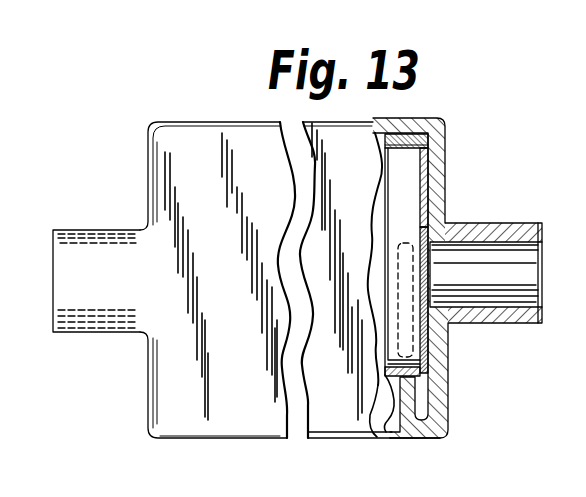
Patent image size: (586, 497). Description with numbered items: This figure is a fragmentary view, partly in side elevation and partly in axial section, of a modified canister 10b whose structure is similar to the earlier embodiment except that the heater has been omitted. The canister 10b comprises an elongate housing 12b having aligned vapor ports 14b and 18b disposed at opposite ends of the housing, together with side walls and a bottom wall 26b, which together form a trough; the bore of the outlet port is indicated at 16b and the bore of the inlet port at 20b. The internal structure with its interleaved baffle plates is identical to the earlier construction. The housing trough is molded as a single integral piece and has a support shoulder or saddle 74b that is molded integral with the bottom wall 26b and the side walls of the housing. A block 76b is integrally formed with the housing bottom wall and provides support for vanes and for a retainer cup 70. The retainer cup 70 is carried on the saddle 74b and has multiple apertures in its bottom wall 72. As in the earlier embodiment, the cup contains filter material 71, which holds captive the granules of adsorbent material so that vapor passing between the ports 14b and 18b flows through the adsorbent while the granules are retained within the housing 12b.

The canister 10b is at (212, 106).
The elongate housing 12b is at (226, 422).
The vapor port 14b is at (506, 212).
The outlet pipe bore 16b is at (507, 297).
The vapor port 18b is at (121, 218).
The inlet pipe bore 20b is at (101, 314).
The bottom wall 26b is at (392, 439).
The retainer cup 70 is at (417, 142).
The filter material 71 is at (410, 202).
The bottom wall of the retainer cup 72 is at (445, 192).
The support shoulder or saddle 74b is at (418, 400).
The block 76b is at (385, 405).